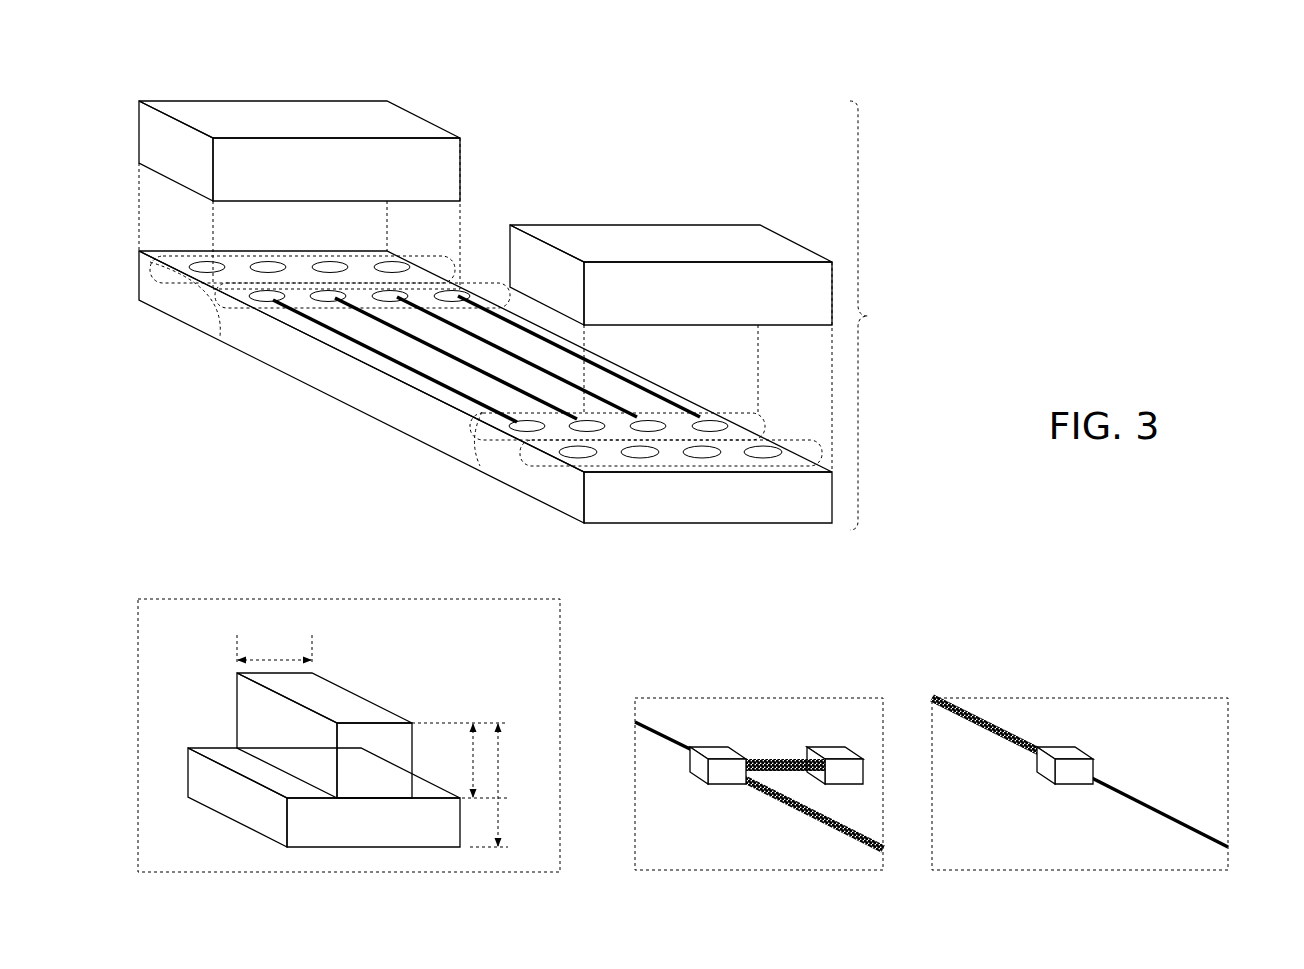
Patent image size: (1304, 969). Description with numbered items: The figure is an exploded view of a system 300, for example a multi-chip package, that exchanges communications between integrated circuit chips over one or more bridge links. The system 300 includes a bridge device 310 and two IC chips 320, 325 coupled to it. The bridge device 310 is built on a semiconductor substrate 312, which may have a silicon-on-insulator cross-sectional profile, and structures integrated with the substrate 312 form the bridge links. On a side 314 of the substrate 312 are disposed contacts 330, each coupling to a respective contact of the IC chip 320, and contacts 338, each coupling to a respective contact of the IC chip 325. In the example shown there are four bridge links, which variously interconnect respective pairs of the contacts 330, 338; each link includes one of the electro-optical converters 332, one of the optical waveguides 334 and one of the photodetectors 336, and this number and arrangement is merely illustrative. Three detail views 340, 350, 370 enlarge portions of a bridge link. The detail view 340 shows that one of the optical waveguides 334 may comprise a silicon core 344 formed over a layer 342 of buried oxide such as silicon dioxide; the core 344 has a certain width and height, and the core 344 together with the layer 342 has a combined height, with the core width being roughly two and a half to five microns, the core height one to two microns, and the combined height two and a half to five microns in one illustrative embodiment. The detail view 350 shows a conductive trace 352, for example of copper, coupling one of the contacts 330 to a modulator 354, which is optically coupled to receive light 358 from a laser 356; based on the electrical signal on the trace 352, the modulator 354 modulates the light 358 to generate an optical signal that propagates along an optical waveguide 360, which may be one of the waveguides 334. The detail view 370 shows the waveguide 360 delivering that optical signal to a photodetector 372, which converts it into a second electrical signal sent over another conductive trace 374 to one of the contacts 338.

The system 300 is at (734, 105).
The bridge device 310 is at (694, 507).
The semiconductor substrate 312 is at (370, 391).
The side of substrate 314 is at (310, 341).
The IC chip 320 is at (386, 180).
The IC chip 325 is at (761, 302).
The contacts 330 is at (247, 257).
The electro-optical converters 332 is at (220, 333).
The optical waveguides 334 is at (440, 371).
The photodetectors 336 is at (481, 414).
The contacts 338 is at (817, 436).
The detail view 340 is at (349, 724).
The layer of buried oxide material 342 is at (361, 832).
The silicon core 344 is at (359, 770).
The detail view 350 is at (853, 772).
The conductive trace 352 is at (674, 736).
The modulator 354 is at (733, 787).
The laser 356 is at (826, 742).
The light 358 is at (793, 773).
The optical waveguide 360 is at (827, 825).
The detail view 370 is at (1080, 772).
The photodetector 372 is at (1066, 790).
The conductive trace 374 is at (1162, 817).